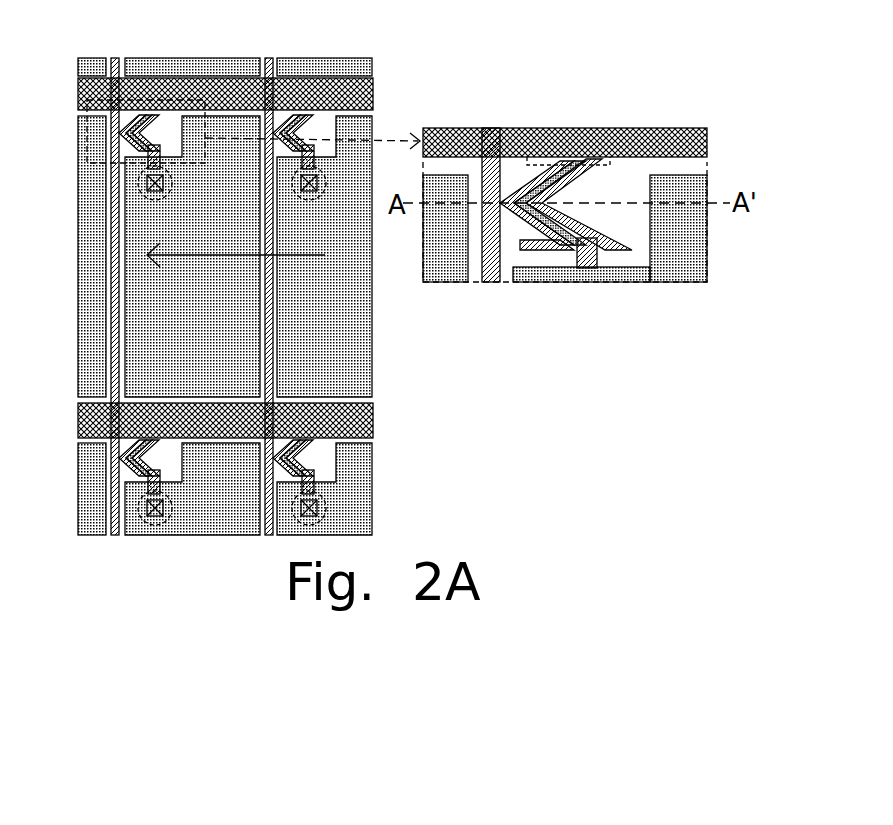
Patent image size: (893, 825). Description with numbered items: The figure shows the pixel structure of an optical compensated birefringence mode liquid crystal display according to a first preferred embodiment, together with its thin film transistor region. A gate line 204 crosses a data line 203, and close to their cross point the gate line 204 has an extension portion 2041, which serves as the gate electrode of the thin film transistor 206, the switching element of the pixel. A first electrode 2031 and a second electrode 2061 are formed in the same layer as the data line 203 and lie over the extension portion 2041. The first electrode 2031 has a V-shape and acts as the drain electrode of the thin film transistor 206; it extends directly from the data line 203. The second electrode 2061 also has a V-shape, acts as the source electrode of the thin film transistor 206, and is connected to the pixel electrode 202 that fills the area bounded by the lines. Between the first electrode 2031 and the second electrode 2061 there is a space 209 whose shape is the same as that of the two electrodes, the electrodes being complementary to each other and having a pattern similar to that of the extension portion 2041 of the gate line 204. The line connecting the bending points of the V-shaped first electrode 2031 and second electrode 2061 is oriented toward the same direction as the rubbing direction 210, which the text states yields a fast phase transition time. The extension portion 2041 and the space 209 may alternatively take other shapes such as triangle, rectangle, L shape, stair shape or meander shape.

The pixel electrode 202 is at (358, 362).
The data line 203 is at (268, 62).
The gate line 204 is at (340, 97).
The first electrode 2031 is at (535, 170).
The space 209 is at (566, 178).
The second electrode 2061 is at (596, 162).
The thin film transistor 206 is at (598, 240).
The extension portion 2041 is at (605, 177).
The rubbing direction 210 is at (238, 244).